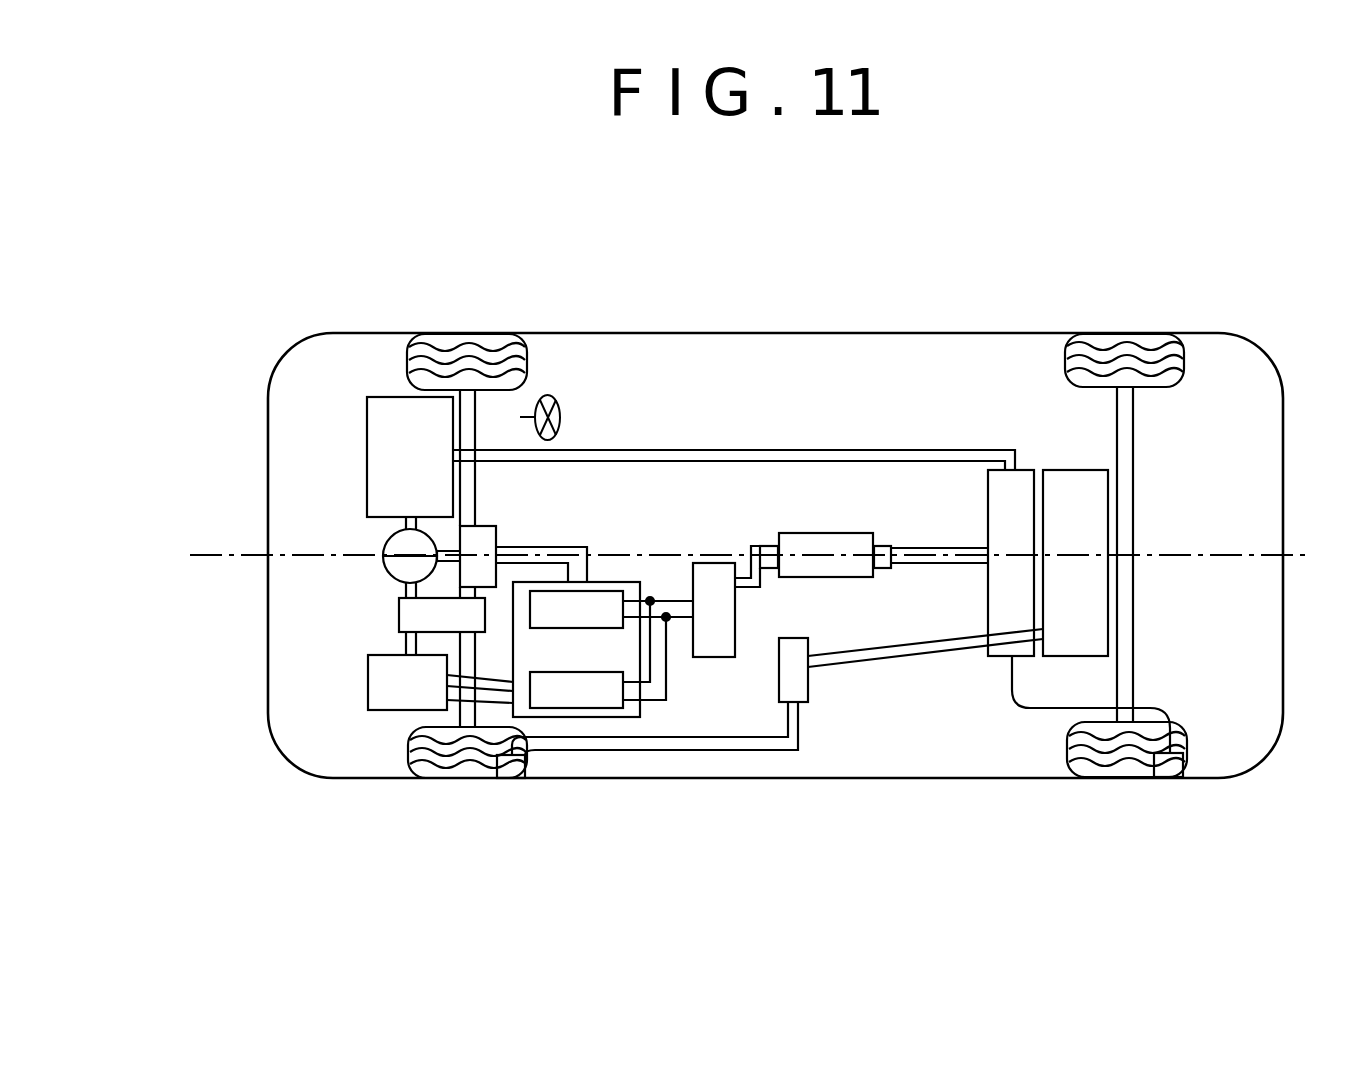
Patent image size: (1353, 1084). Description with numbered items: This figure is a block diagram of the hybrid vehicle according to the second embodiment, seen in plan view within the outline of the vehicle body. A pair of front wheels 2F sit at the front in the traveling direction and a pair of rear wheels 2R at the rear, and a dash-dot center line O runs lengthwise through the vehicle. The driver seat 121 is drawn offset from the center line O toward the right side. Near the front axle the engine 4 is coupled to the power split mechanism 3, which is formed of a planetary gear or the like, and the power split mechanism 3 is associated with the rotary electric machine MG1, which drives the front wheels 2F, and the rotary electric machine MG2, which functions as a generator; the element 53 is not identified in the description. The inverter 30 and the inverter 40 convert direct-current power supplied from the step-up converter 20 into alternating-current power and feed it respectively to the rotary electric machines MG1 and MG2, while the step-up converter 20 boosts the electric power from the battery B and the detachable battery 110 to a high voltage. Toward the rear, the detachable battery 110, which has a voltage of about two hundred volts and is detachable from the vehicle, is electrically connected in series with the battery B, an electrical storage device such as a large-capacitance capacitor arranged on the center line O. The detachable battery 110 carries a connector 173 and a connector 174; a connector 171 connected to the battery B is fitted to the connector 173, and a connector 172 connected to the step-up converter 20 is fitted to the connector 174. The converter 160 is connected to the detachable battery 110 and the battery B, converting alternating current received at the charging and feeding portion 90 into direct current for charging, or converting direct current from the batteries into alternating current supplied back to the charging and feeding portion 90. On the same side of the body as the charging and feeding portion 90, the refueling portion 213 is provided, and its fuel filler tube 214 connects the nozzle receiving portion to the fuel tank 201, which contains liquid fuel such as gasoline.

The front wheels 2F is at (465, 343).
The rear wheels 2R is at (1130, 762).
The power split mechanism 3 is at (387, 548).
The engine 4 is at (367, 458).
The rotary electric machine MG1 is at (368, 686).
The rotary electric machine MG2 is at (497, 537).
The center line O is at (208, 556).
The step-up converter 20 is at (715, 658).
The inverter 30 is at (555, 693).
The inverter 40 is at (595, 610).
The front drive shaft 53 is at (465, 714).
The charging and feeding portion 90 is at (510, 772).
The detachable battery 110 is at (827, 533).
The driver seat 121 is at (558, 377).
The converter 160 is at (808, 683).
The connector 171 is at (887, 546).
The connector 172 is at (766, 546).
The connector 173 is at (879, 546).
The connector 174 is at (772, 546).
The fuel tank 201 is at (998, 657).
The refueling portion 213 is at (1167, 765).
The fuel filler tube 214 is at (1047, 708).
The battery B is at (1078, 657).